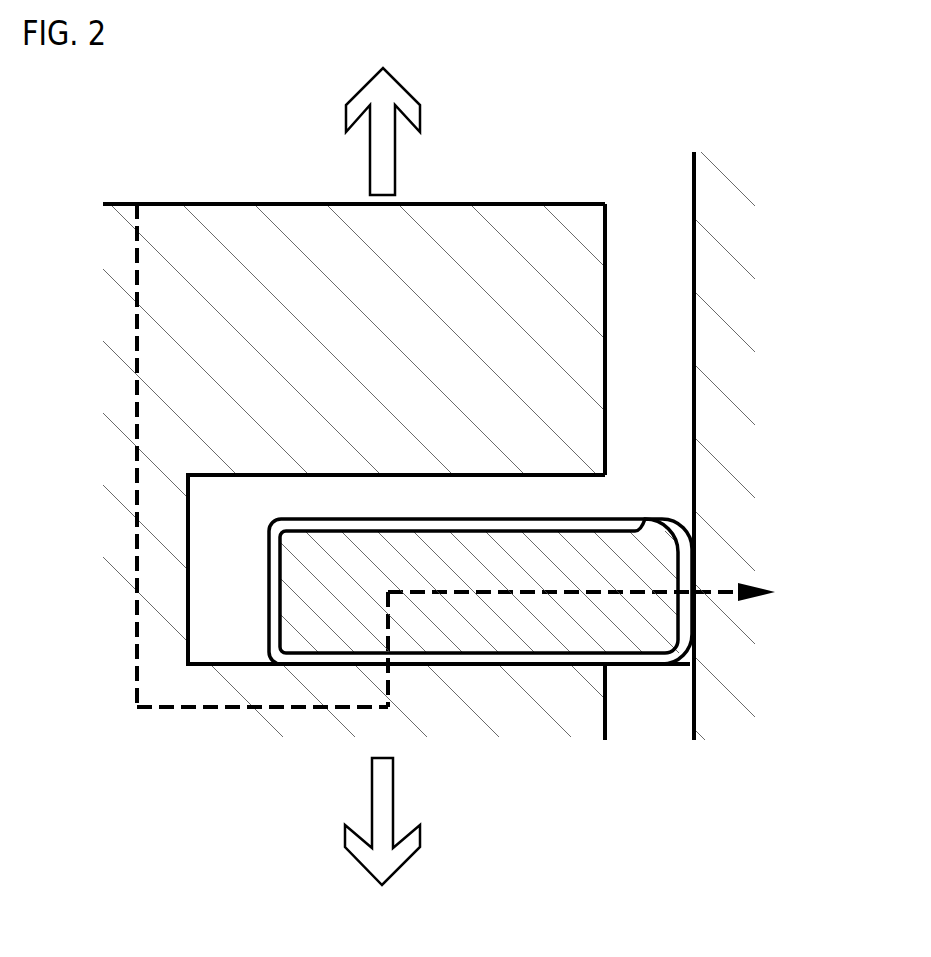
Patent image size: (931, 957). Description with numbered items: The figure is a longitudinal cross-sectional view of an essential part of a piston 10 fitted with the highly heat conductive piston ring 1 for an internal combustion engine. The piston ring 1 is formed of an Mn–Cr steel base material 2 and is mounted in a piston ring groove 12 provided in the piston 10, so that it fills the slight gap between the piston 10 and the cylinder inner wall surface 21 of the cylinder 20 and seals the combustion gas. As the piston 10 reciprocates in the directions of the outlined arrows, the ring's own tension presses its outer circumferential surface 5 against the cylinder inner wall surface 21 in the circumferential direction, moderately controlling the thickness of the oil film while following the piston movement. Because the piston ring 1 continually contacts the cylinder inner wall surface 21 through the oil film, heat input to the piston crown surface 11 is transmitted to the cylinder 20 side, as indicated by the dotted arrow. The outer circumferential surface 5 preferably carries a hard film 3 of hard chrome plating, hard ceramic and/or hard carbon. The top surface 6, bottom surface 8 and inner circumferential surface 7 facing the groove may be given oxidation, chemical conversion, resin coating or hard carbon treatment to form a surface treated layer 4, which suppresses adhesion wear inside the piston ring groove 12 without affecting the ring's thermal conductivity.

The highly heat conductive piston ring 1 is at (437, 386).
The base material 2 is at (514, 555).
The hard film 3 is at (697, 648).
The surface treated layer 4 is at (620, 667).
The outer circumferential surface 5 is at (697, 564).
The top surface 6 is at (313, 518).
The inner circumferential surface 7 is at (272, 600).
The bottom surface 8 is at (307, 667).
The piston 10 is at (153, 272).
The piston crown surface 11 is at (290, 200).
The piston ring groove 12 is at (200, 500).
The cylinder 20 is at (740, 695).
The cylinder inner wall surface 21 is at (690, 707).